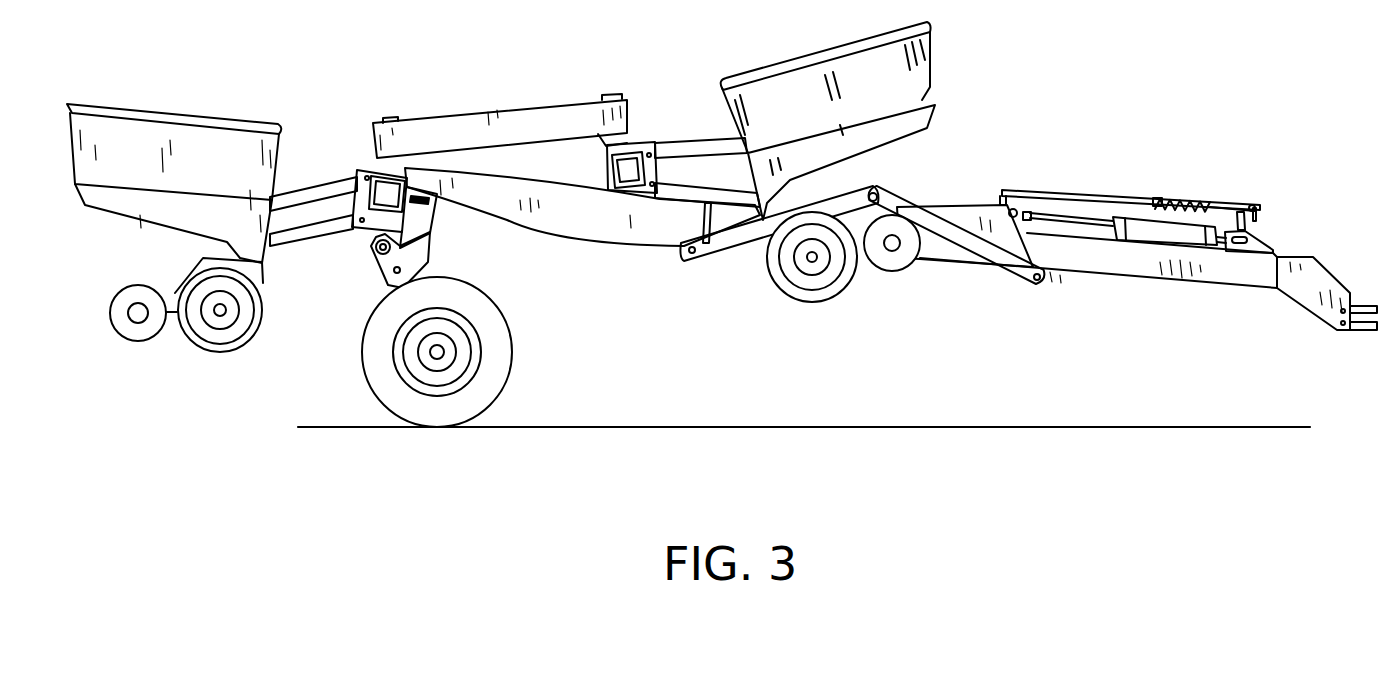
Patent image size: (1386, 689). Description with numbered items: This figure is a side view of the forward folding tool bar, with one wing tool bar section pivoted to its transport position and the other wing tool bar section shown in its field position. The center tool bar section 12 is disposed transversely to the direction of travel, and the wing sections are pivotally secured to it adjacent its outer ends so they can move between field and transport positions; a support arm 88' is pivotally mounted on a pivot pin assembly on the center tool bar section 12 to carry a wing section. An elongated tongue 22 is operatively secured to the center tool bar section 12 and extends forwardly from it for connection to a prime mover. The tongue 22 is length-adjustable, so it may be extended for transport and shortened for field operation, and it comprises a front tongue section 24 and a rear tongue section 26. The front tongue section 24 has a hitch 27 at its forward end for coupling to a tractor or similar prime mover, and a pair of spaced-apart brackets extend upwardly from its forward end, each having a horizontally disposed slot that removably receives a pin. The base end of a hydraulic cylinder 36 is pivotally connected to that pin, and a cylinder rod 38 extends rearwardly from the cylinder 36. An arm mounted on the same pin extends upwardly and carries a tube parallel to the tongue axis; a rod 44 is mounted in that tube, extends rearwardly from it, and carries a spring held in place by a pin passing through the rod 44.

The center tool bar section 12 is at (437, 205).
The elongated tongue 22 is at (1124, 256).
The front tongue section 24 is at (1193, 273).
The rear tongue section 26 is at (627, 220).
The hitch 27 is at (1370, 303).
The hydraulic cylinder 36 is at (1176, 212).
The cylinder rod 38 is at (1070, 217).
The rod 44 is at (1127, 197).
The support arm 88' is at (500, 86).